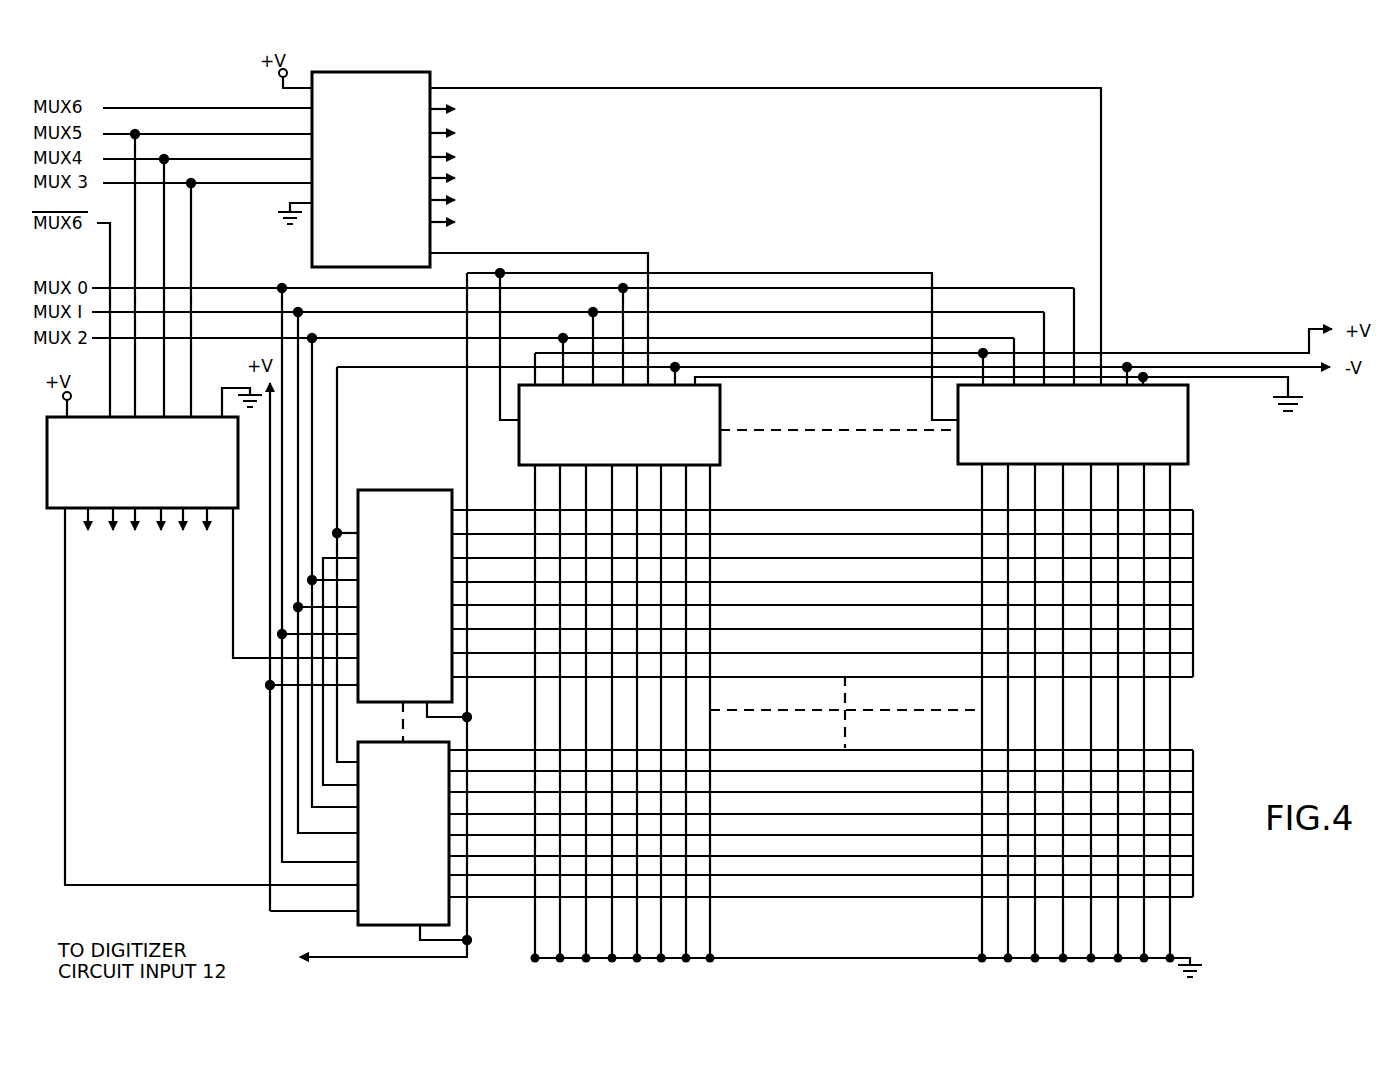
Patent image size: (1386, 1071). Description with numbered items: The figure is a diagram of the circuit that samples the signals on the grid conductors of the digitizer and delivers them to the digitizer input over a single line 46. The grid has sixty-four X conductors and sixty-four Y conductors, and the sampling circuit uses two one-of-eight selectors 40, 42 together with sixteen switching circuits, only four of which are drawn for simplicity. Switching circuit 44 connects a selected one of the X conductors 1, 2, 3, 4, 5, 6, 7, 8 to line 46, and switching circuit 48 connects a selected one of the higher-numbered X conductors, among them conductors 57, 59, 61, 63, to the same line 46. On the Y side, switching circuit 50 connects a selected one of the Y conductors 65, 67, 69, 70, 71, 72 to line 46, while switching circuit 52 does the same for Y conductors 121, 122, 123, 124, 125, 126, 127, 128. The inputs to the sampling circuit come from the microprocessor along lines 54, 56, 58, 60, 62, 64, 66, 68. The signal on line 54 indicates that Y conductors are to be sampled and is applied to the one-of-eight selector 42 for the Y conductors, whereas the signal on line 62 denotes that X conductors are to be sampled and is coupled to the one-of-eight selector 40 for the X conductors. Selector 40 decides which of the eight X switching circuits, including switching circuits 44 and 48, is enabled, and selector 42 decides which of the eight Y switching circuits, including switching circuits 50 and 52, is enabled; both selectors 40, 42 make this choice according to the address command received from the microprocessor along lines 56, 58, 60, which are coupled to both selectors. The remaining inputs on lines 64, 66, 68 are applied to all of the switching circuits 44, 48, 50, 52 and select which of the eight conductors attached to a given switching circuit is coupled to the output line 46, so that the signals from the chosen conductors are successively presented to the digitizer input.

The one-of-eight selector 40 is at (57, 510).
The one-of-eight selector 42 is at (312, 244).
The switching circuit 44 is at (424, 486).
The line 46 is at (385, 956).
The switching circuit 48 is at (389, 736).
The switching circuit 50 is at (720, 449).
The switching circuit 52 is at (1188, 424).
The line 54 is at (170, 107).
The line 56 is at (281, 132).
The line 58 is at (281, 157).
The line 60 is at (210, 185).
The line 62 is at (104, 221).
The line 64 is at (247, 284).
The line 66 is at (211, 312).
The line 68 is at (211, 337).
The Y conductor 65 is at (535, 475).
The Y conductor 67 is at (588, 478).
The Y conductor 69 is at (637, 545).
The Y conductor 70 is at (662, 570).
The Y conductor 71 is at (687, 595).
The Y conductor 72 is at (710, 620).
The X conductor 57 is at (480, 748).
The X conductor 59 is at (487, 791).
The X conductor 61 is at (487, 833).
The X conductor 63 is at (487, 874).
The X conductor 1 is at (494, 508).
The X conductor 2 is at (492, 532).
The X conductor 3 is at (495, 555).
The X conductor 4 is at (492, 578).
The X conductor 5 is at (492, 603).
The X conductor 6 is at (492, 627).
The X conductor 7 is at (492, 650).
The X conductor 8 is at (492, 674).
The Y conductor 121 is at (980, 478).
The Y conductor 122 is at (1008, 490).
The Y conductor 123 is at (1035, 518).
The Y conductor 124 is at (1063, 545).
The Y conductor 125 is at (1091, 565).
The Y conductor 126 is at (1118, 593).
The Y conductor 127 is at (1145, 618).
The Y conductor 128 is at (1170, 643).